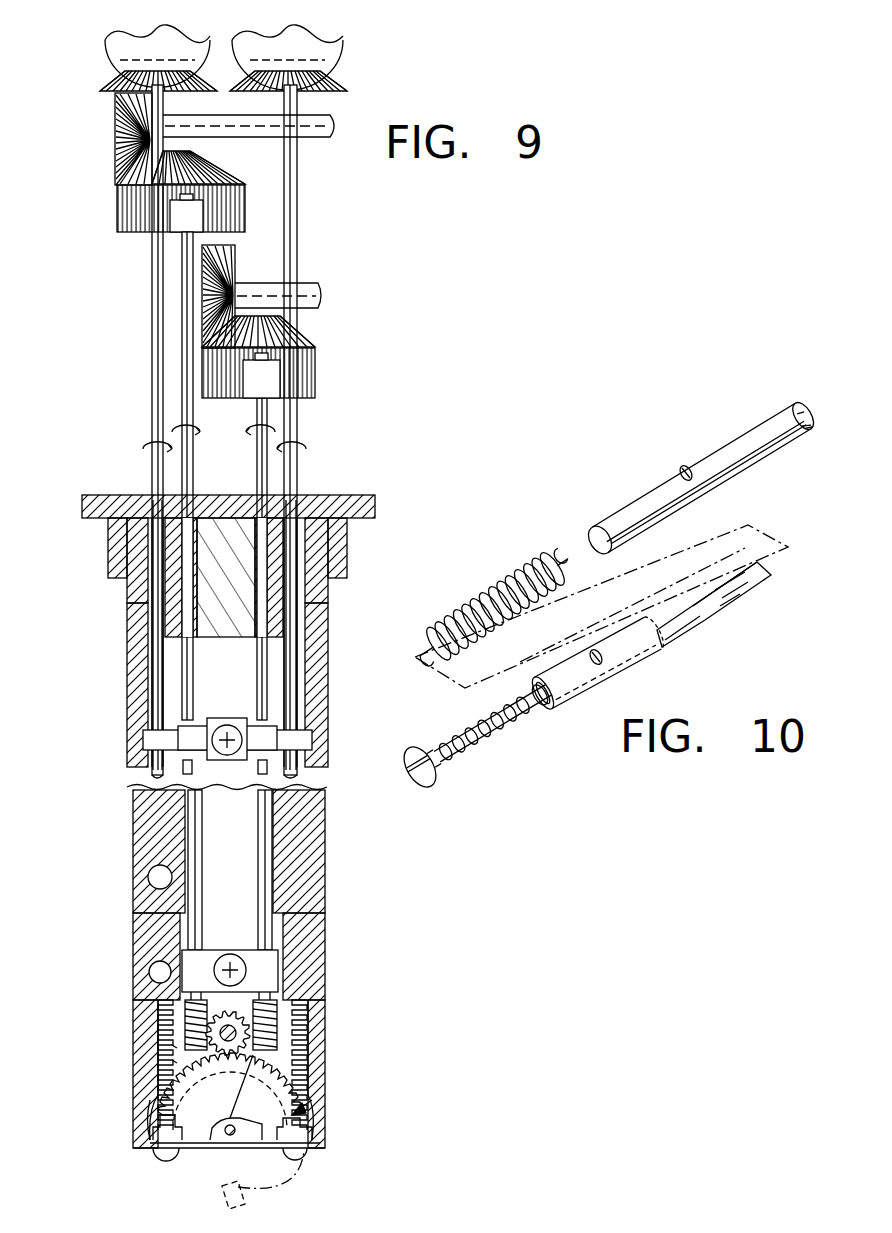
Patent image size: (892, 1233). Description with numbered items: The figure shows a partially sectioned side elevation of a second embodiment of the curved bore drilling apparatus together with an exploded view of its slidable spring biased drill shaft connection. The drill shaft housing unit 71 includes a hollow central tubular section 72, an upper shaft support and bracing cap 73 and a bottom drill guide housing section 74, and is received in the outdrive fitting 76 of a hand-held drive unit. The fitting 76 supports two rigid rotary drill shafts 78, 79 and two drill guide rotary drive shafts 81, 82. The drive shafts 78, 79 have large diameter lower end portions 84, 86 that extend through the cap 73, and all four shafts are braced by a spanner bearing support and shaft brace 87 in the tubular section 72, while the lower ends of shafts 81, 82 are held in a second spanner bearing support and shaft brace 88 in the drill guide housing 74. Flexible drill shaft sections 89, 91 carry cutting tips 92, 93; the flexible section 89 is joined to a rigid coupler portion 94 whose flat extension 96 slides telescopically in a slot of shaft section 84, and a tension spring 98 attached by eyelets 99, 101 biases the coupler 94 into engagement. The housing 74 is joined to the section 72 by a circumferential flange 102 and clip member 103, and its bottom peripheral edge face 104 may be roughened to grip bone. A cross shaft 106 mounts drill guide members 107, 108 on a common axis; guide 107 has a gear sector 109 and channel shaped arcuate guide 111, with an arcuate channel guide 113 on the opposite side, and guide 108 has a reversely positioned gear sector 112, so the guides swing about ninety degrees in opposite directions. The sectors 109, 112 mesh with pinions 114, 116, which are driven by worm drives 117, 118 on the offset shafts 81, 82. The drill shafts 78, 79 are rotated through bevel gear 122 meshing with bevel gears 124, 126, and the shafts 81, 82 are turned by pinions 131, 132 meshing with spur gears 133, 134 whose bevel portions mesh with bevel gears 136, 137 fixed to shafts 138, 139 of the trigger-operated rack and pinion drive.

In FIG. 9, the drill shaft housing unit 71 is at (115, 787).
In FIG. 9, the hollow central tubular section 72 is at (127, 716).
In FIG. 9, the upper shaft support and bracing cap 73 is at (127, 595).
In FIG. 9, the bottom drill guide housing section 74 is at (133, 1002).
In FIG. 9, the outdrive fitting 76 is at (347, 556).
In FIG. 9, the rigid rotary drill shaft 78 is at (153, 346).
In FIG. 9, the rigid rotary drill shaft 79 is at (297, 428).
In FIG. 9, the drill guide rotary drive shaft 81 is at (257, 446).
In FIG. 9, the drill guide rotary drive shaft 82 is at (193, 487).
In FIG. 9, the large diameter lower end portion of drive shaft 84 is at (153, 674).
In FIG. 10, the large diameter lower end portion of drive shaft 84 is at (746, 440).
In FIG. 9, the large diameter lower end portion of drive shaft 86 is at (297, 676).
In FIG. 9, the spanner bearing support and shaft brace 87 is at (227, 718).
In FIG. 9, the spanner bearing support and shaft brace 88 is at (210, 948).
In FIG. 9, the flexible drill shaft section 89 is at (160, 1046).
In FIG. 10, the flexible drill shaft section 89 is at (520, 742).
In FIG. 9, the flexible drill shaft section 91 is at (305, 1052).
In FIG. 9, the cutting tip 92 is at (166, 1161).
In FIG. 9, the cutting tip 93 is at (300, 1158).
In FIG. 10, the rigid coupler portion 94 is at (618, 668).
In FIG. 10, the flat extension 96 is at (766, 580).
In FIG. 10, the tension spring 98 is at (512, 570).
In FIG. 10, the eyelet 99 is at (683, 469).
In FIG. 10, the eyelet 101 is at (596, 650).
In FIG. 9, the circumferential flange 102 is at (325, 918).
In FIG. 9, the clip member 103 is at (148, 886).
In FIG. 9, the bottom peripheral edge face 104 is at (320, 1146).
In FIG. 9, the cross shaft 106 is at (230, 1136).
In FIG. 9, the drill guide member 107 is at (229, 1091).
In FIG. 9, the drill guide member 108 is at (283, 1128).
In FIG. 9, the gear sector 109 is at (160, 1116).
In FIG. 9, the channel shaped arcuate guide 111 is at (305, 1102).
In FIG. 9, the gear sector 112 is at (292, 1075).
In FIG. 9, the arcuate channel guide 113 is at (162, 1091).
In FIG. 9, the pinion 114 is at (185, 1036).
In FIG. 9, the pinion 116 is at (278, 1034).
In FIG. 9, the worm drive 117 is at (214, 1000).
In FIG. 9, the worm drive 118 is at (283, 1000).
In FIG. 9, the bevel gear 122 is at (110, 86).
In FIG. 9, the bevel gear 124 is at (115, 38).
In FIG. 9, the bevel gear 126 is at (332, 50).
In FIG. 9, the pinion 131 is at (246, 396).
In FIG. 9, the pinion 132 is at (170, 232).
In FIG. 9, the spur gear 133 is at (316, 372).
In FIG. 9, the spur gear 134 is at (117, 204).
In FIG. 9, the bevel gear 136 is at (262, 272).
In FIG. 9, the bevel gear 137 is at (115, 127).
In FIG. 9, the shaft 138 is at (322, 296).
In FIG. 9, the shaft 139 is at (330, 118).